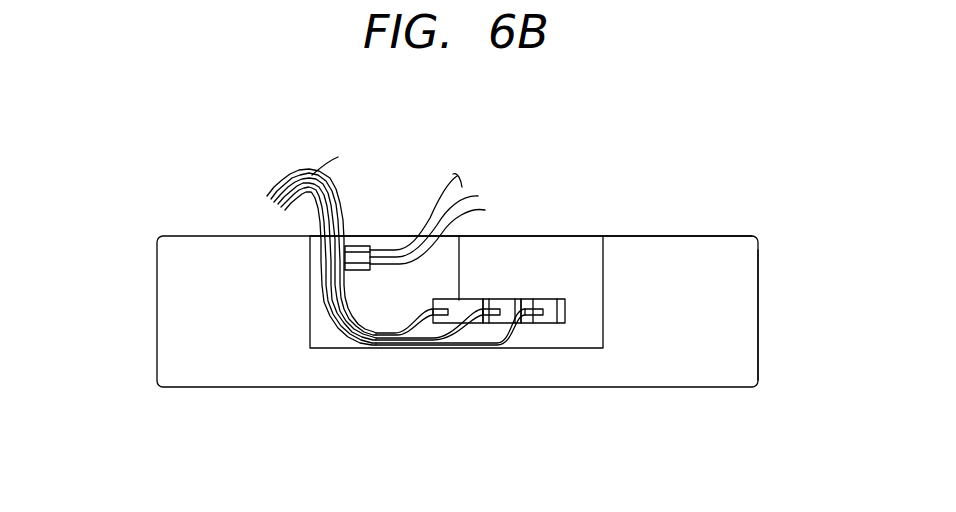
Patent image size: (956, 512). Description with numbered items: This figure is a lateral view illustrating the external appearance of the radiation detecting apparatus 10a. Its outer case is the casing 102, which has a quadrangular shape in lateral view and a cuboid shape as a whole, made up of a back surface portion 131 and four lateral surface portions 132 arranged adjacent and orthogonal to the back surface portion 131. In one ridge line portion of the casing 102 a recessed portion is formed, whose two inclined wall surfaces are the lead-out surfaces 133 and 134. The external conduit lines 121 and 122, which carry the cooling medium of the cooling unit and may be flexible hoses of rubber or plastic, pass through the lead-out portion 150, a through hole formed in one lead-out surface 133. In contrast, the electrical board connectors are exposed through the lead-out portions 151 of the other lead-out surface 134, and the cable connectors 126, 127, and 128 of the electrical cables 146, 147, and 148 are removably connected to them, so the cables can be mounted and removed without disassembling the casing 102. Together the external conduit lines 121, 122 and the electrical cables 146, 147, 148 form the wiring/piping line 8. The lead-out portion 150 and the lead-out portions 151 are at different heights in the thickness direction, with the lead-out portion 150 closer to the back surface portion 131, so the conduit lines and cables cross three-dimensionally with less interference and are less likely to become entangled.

The wiring/piping line 8 is at (472, 103).
The radiation detecting apparatus 10a is at (723, 405).
The casing 102 is at (177, 311).
The external conduit line 121 is at (376, 250).
The external conduit line 122 is at (438, 210).
The cable connector 126 is at (550, 305).
The cable connector 127 is at (513, 307).
The cable connector 128 is at (473, 307).
The back surface portion 131 is at (705, 236).
The lateral surface portion 132 is at (720, 349).
The lead-out surface 133 is at (327, 333).
The lead-out surface 134 is at (580, 284).
The electrical cable 146 is at (510, 330).
The electrical cable 147 is at (468, 330).
The electrical cable 148 is at (425, 330).
The lead-out portion 150 is at (361, 272).
The lead-out portions 151 is at (567, 309).